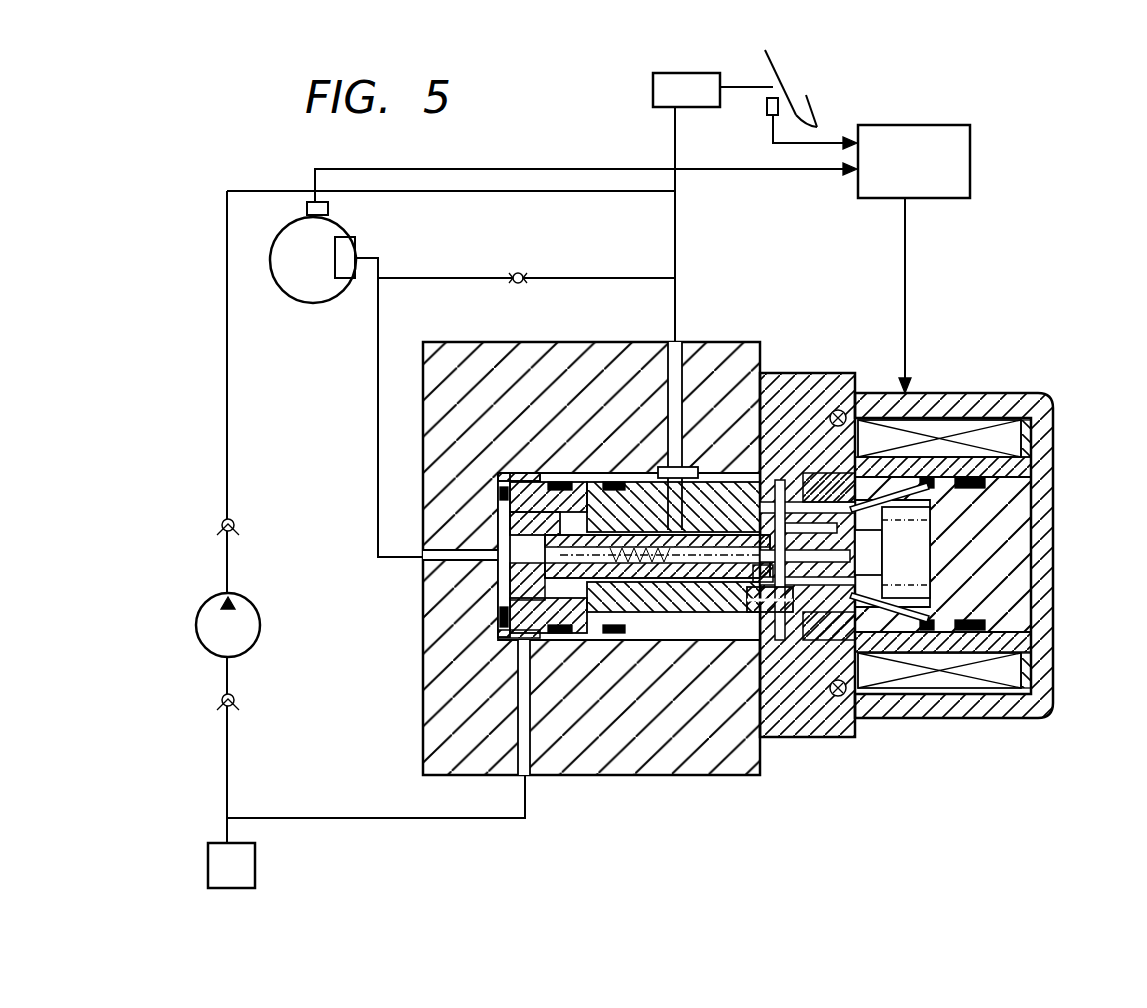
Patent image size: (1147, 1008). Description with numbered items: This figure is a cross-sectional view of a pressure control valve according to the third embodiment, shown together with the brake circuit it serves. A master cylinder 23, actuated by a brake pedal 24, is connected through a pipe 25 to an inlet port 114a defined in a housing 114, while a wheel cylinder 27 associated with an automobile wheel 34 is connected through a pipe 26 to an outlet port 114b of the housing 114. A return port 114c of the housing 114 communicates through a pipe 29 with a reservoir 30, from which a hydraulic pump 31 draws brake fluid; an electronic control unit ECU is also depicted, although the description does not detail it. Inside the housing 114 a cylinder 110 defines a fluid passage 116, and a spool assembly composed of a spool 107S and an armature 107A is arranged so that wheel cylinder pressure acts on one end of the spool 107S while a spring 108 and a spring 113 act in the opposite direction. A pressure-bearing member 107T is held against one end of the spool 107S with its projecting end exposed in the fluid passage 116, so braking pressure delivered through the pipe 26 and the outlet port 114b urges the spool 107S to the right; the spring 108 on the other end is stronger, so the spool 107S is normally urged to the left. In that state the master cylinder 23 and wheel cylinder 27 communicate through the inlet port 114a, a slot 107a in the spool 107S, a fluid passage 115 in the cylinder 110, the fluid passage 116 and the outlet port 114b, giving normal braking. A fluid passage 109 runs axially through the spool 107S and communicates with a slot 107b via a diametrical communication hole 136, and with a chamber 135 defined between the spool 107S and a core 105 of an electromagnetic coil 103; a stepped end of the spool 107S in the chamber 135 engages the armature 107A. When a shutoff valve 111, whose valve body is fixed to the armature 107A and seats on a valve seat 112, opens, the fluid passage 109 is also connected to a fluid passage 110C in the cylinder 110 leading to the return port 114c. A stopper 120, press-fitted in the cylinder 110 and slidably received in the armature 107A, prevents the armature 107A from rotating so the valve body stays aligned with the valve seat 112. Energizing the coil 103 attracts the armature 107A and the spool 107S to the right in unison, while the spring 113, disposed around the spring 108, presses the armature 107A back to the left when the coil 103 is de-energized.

The master cylinder 23 is at (653, 87).
The brake pedal 24 is at (777, 63).
The pipe 25 is at (677, 228).
The pipe 26 is at (378, 263).
The wheel cylinder 27 is at (355, 248).
The pipe 29 is at (383, 818).
The reservoir 30 is at (215, 878).
The hydraulic pump 31 is at (213, 610).
The automobile wheel 34 is at (292, 282).
The electromagnetic coil 103 is at (932, 682).
The core 105 is at (1023, 547).
The slot 107a is at (640, 513).
The slot 107b is at (563, 527).
The armature 107A is at (812, 675).
The spool 107S is at (690, 578).
The pressure-bearing member 107T is at (510, 600).
The spring 108 is at (935, 517).
The fluid passage 109 is at (720, 600).
The cylinder 110 is at (590, 612).
The fluid passage 110C is at (645, 612).
The shutoff valve 111 is at (800, 650).
The valve seat 112 is at (748, 740).
The spring 113 is at (947, 583).
The housing 114 is at (445, 735).
The inlet port 114a is at (677, 347).
The outlet port 114b is at (423, 557).
The return port 114c is at (525, 777).
The fluid passage 115 is at (532, 472).
The fluid passage 116 is at (498, 523).
The stopper 120 is at (775, 465).
The chamber 135 is at (880, 500).
The communication hole 136 is at (545, 525).
The electronic control unit ECU is at (642, 259).